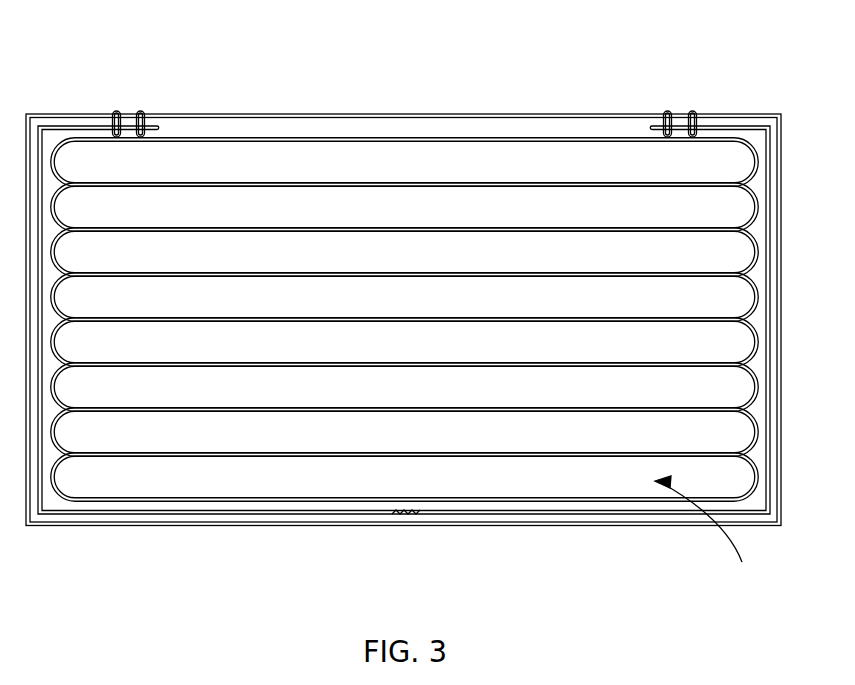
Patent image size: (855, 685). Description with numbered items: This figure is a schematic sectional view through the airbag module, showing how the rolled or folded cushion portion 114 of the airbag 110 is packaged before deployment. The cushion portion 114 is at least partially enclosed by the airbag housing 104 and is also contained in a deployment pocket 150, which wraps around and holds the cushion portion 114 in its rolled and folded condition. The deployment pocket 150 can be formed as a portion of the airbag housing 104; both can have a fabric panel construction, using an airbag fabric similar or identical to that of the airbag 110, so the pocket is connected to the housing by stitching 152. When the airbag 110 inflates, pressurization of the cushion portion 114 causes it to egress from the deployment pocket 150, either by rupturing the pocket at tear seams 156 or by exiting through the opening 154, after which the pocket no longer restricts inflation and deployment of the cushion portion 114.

The airbag housing 104 is at (498, 115).
The airbag 110 is at (373, 167).
The cushion portion 114 is at (373, 167).
The deployment pocket 150 is at (242, 515).
The stitching 152 is at (114, 112).
The opening 154 is at (707, 532).
The tear seams 156 is at (403, 515).